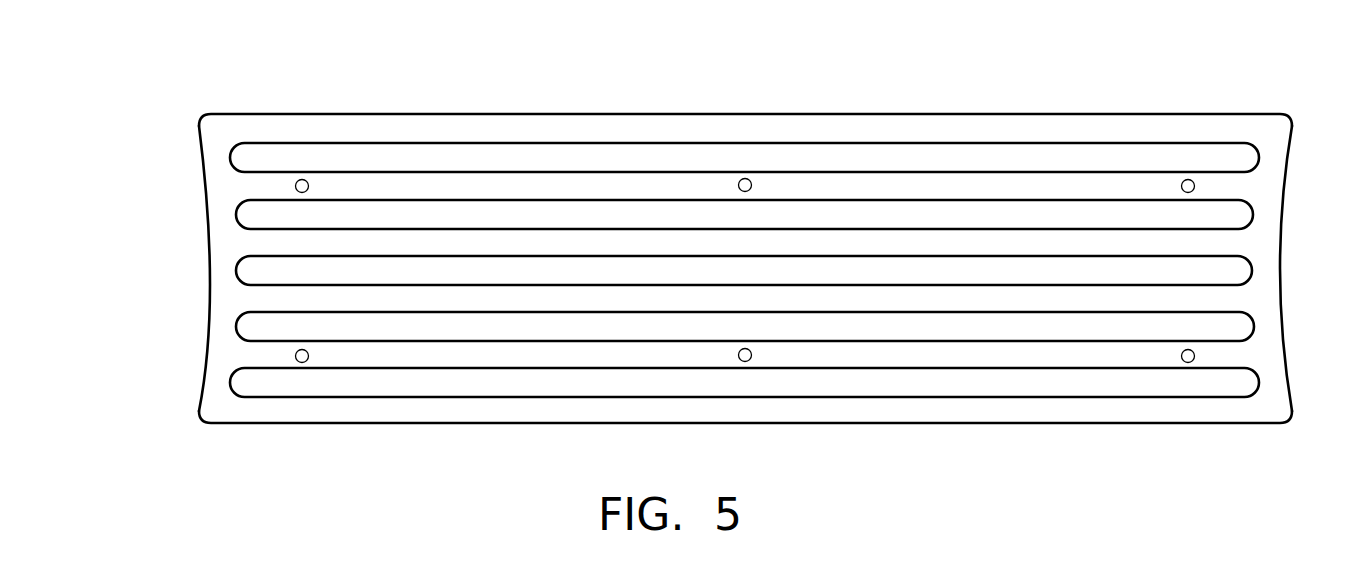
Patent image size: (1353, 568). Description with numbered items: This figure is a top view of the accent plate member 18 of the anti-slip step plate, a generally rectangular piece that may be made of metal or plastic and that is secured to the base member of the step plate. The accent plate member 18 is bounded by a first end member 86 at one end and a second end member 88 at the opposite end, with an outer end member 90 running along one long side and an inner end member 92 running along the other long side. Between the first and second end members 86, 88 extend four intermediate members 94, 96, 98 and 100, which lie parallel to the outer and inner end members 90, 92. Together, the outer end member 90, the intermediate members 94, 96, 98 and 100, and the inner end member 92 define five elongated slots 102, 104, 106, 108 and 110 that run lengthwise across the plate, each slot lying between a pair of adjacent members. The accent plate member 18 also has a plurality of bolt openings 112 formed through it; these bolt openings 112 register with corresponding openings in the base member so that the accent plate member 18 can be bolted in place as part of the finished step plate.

The accent plate member 18 is at (780, 103).
The first end member 86 is at (232, 303).
The second end member 88 is at (1263, 265).
The outer end member 90 is at (910, 413).
The inner end member 92 is at (910, 130).
The intermediate member 94 is at (405, 360).
The intermediate member 96 is at (450, 300).
The intermediate member 98 is at (253, 242).
The intermediate member 100 is at (253, 180).
The elongated slot 102 is at (315, 387).
The elongated slot 104 is at (253, 327).
The elongated slot 106 is at (253, 273).
The elongated slot 108 is at (253, 215).
The elongated slot 110 is at (277, 157).
The bolt openings 112 is at (745, 179).